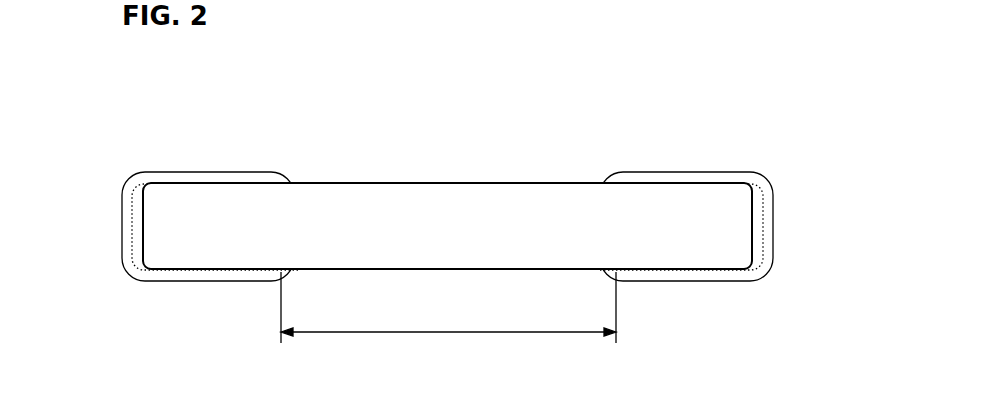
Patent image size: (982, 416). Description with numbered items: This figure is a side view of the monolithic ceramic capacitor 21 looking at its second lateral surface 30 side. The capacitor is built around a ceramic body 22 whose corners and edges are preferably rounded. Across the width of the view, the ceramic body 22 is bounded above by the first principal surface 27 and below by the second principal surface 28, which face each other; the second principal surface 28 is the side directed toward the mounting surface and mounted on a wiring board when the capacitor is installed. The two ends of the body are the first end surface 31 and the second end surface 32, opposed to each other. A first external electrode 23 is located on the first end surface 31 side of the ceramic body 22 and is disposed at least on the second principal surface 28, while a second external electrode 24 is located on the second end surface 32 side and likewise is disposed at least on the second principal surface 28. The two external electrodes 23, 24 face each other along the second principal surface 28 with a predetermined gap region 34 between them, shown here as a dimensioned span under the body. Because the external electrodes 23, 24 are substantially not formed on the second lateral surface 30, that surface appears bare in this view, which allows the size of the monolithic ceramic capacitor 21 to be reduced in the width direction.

The monolithic ceramic capacitor 21 is at (149, 83).
The ceramic body 22 is at (552, 176).
The first external electrode 23 is at (122, 213).
The second external electrode 24 is at (773, 208).
The first principal surface 27 is at (403, 183).
The second principal surface 28 is at (423, 270).
The second lateral surface 30 is at (473, 191).
The first end surface 31 is at (132, 238).
The second end surface 32 is at (763, 232).
The gap region 34 is at (462, 334).